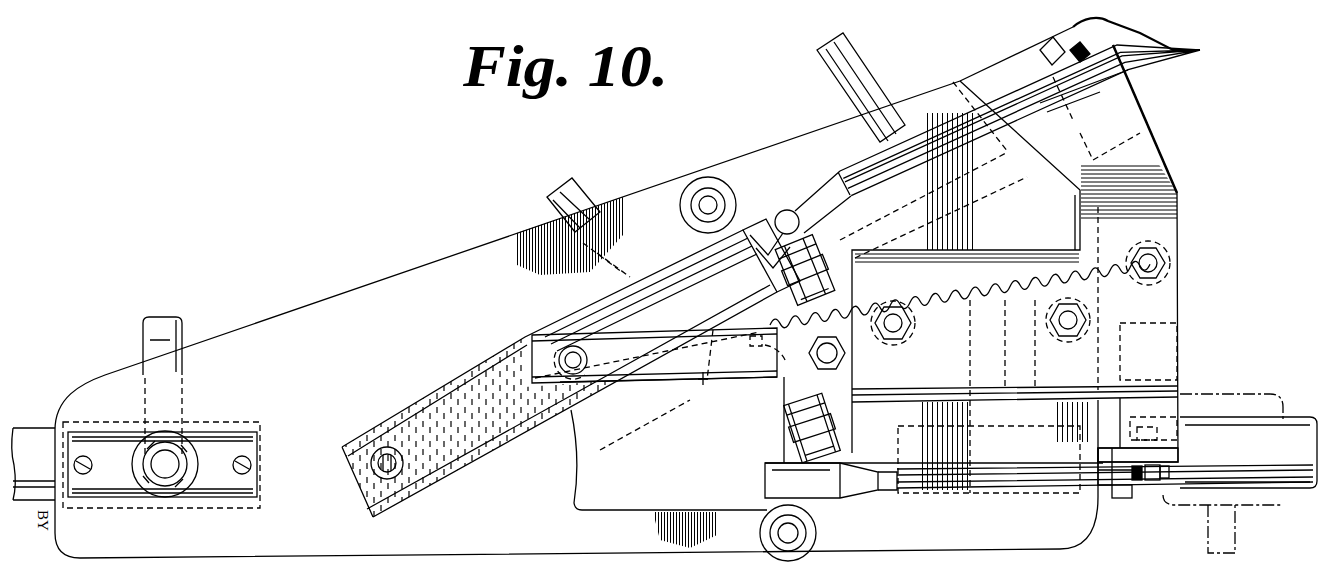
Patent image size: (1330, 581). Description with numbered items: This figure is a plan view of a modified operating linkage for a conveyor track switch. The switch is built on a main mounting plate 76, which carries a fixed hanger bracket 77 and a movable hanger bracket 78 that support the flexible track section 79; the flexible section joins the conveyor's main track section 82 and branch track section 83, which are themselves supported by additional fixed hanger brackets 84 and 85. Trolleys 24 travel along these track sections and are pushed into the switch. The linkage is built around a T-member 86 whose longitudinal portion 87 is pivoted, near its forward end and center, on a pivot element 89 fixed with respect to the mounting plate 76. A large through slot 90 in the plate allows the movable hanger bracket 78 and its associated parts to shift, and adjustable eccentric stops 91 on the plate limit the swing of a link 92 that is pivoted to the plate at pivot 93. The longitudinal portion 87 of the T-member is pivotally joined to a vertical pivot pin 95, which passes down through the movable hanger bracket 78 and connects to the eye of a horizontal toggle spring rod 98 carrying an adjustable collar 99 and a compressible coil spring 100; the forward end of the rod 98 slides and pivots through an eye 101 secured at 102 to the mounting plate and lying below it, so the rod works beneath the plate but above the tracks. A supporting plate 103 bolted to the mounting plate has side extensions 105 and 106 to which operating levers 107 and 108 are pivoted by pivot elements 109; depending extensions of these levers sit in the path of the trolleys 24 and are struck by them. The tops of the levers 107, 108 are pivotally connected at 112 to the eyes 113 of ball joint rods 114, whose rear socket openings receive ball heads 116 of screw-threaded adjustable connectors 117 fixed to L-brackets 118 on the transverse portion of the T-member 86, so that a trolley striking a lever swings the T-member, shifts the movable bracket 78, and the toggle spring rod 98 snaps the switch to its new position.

The trolley 24 is at (1246, 390).
The main mounting plate 76 is at (372, 282).
The fixed hanger bracket 77 is at (143, 335).
The movable hanger bracket 78 is at (578, 188).
The flexible track section 79 is at (304, 445).
The main track section 82 is at (1302, 492).
The branch track section 83 is at (1157, 68).
The fixed hanger bracket 84 is at (860, 66).
The fixed hanger bracket 85 is at (1046, 491).
The T-member 86 is at (737, 378).
The longitudinal portion 87 is at (653, 378).
The pivot element 89 is at (846, 353).
The through slot 90 is at (697, 508).
The adjustable eccentric stop 91 is at (737, 180).
The link 92 is at (479, 365).
The pivot 93 is at (389, 452).
The vertical pivot pin 95 is at (571, 350).
The toggle spring rod 98 is at (703, 390).
The adjustable collar 99 is at (768, 348).
The compressible coil spring 100 is at (960, 377).
The eye 101 is at (1178, 226).
The fastening point 102 is at (1166, 276).
The supporting plate 103 is at (968, 258).
The side extension 105 is at (1075, 96).
The side extension 106 is at (1150, 440).
The operating lever 107 is at (1160, 43).
The operating lever 108 is at (1170, 456).
The pivot element 109 is at (1153, 483).
The pivotal connection 112 is at (1033, 98).
The eye 113 is at (1040, 50).
The ball joint rod 114 is at (985, 92).
The ball head 116 is at (783, 212).
The screw-threaded adjustable connector 117 is at (826, 272).
The L-bracket 118 is at (830, 266).